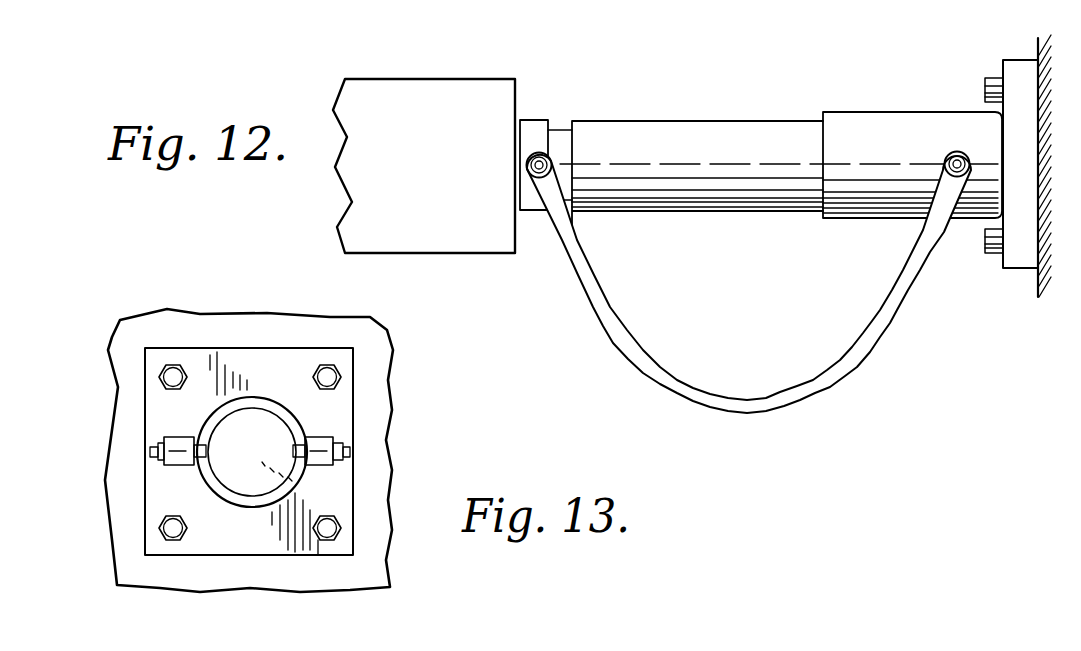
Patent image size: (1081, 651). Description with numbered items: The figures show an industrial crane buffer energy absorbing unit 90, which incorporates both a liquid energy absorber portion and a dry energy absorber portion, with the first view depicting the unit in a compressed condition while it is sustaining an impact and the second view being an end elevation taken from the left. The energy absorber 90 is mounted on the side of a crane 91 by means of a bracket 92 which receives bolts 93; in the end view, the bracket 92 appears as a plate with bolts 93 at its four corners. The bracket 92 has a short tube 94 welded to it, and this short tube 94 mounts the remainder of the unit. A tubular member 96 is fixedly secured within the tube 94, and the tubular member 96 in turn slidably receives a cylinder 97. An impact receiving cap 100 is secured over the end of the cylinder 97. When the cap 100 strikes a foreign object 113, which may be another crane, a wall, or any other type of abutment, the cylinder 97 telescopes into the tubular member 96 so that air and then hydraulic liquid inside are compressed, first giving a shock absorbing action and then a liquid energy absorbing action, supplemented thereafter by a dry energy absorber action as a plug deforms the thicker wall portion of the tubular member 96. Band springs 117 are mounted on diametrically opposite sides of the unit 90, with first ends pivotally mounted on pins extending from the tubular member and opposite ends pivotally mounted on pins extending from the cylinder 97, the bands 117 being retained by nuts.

In FIG. 12, the industrial crane buffer energy absorbing unit 90 is at (768, 227).
In FIG. 12, the crane 91 is at (1038, 48).
In FIG. 13, the crane 91 is at (375, 425).
In FIG. 12, the bracket 92 is at (1015, 258).
In FIG. 13, the bracket 92 is at (268, 357).
In FIG. 12, the bolts 93 is at (985, 85).
In FIG. 13, the bolts 93 is at (170, 365).
In FIG. 12, the short tube 94 is at (862, 112).
In FIG. 12, the tubular member 96 is at (628, 207).
In FIG. 12, the cylinder 97 is at (560, 137).
In FIG. 12, the impact receiving cap 100 is at (538, 120).
In FIG. 13, the impact receiving cap 100 is at (222, 432).
In FIG. 12, the foreign object 113 is at (450, 82).
In FIG. 12, the band springs 117 is at (853, 367).
In FIG. 13, the band springs 117 is at (167, 467).